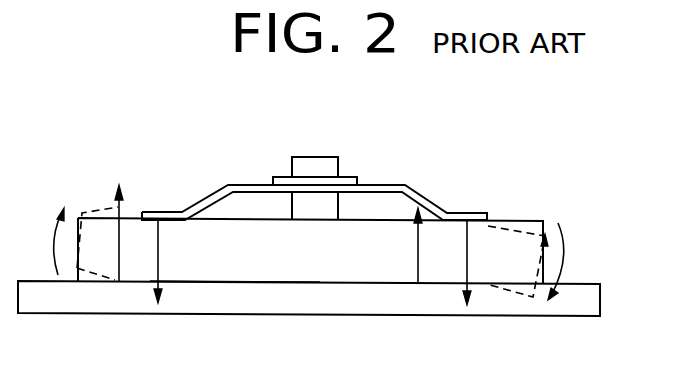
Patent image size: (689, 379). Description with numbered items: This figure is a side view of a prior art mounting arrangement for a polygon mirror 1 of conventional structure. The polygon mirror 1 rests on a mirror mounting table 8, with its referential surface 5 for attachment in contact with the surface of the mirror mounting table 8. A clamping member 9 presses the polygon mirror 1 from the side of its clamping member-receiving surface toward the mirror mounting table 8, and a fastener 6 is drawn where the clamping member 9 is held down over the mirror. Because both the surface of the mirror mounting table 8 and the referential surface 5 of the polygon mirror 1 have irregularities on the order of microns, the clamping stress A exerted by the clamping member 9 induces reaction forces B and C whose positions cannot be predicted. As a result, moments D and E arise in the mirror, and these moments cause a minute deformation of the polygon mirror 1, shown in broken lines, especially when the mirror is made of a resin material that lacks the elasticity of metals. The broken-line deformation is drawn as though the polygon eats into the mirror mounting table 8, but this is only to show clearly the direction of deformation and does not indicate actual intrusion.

The polygon mirror 1 is at (305, 272).
The referential surface 5 is at (231, 274).
The bolt 6 is at (364, 220).
The mirror mounting table 8 is at (375, 303).
The clamping member 9 is at (234, 183).
The clamping stress A is at (158, 258).
The reaction force B is at (118, 243).
The reaction force C is at (418, 250).
The moment D is at (54, 243).
The moment E is at (567, 250).